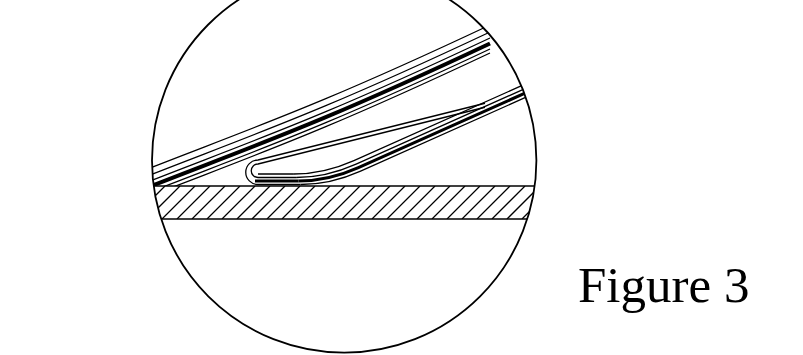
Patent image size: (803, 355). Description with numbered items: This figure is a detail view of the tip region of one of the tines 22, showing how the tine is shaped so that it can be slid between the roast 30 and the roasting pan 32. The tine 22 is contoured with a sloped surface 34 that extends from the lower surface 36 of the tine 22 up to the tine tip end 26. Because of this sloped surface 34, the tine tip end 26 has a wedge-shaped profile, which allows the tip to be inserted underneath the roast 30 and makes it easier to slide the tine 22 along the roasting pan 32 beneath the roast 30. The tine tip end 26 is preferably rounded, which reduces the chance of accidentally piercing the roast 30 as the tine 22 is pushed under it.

The tine 22 is at (506, 76).
The tine tip end 26 is at (240, 163).
The roast 30 is at (236, 80).
The roasting pan 32 is at (187, 208).
The sloped surface 34 is at (297, 187).
The lower surface 36 is at (407, 153).